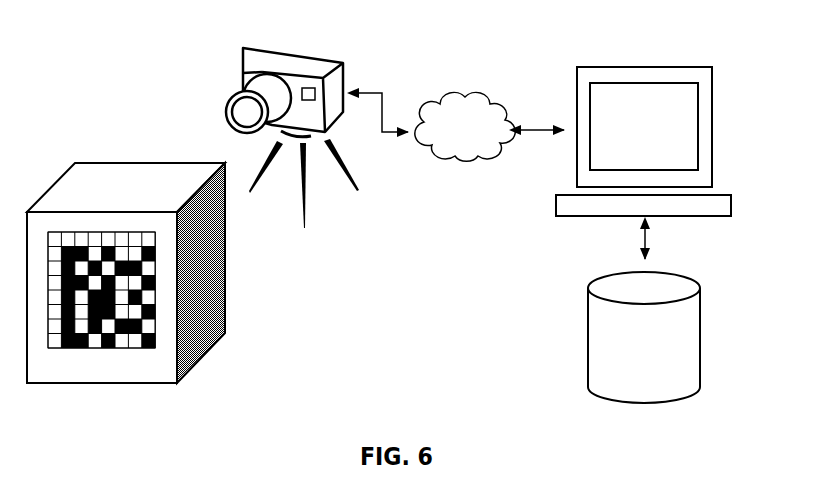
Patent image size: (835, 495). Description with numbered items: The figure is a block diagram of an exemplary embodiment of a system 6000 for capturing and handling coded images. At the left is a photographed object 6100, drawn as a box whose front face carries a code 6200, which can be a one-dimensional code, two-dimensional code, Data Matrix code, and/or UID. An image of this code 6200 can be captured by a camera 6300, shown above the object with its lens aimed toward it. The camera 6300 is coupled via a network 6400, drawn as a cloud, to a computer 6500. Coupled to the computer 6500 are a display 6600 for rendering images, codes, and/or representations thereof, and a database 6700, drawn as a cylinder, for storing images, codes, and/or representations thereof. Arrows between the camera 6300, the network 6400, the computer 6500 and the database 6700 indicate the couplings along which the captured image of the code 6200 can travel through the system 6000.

The system 6000 is at (155, 59).
The photographed object 6100 is at (126, 305).
The code 6200 is at (157, 346).
The camera 6300 is at (292, 163).
The network 6400 is at (465, 145).
The computer 6500 is at (672, 207).
The display 6600 is at (682, 127).
The database 6700 is at (644, 337).